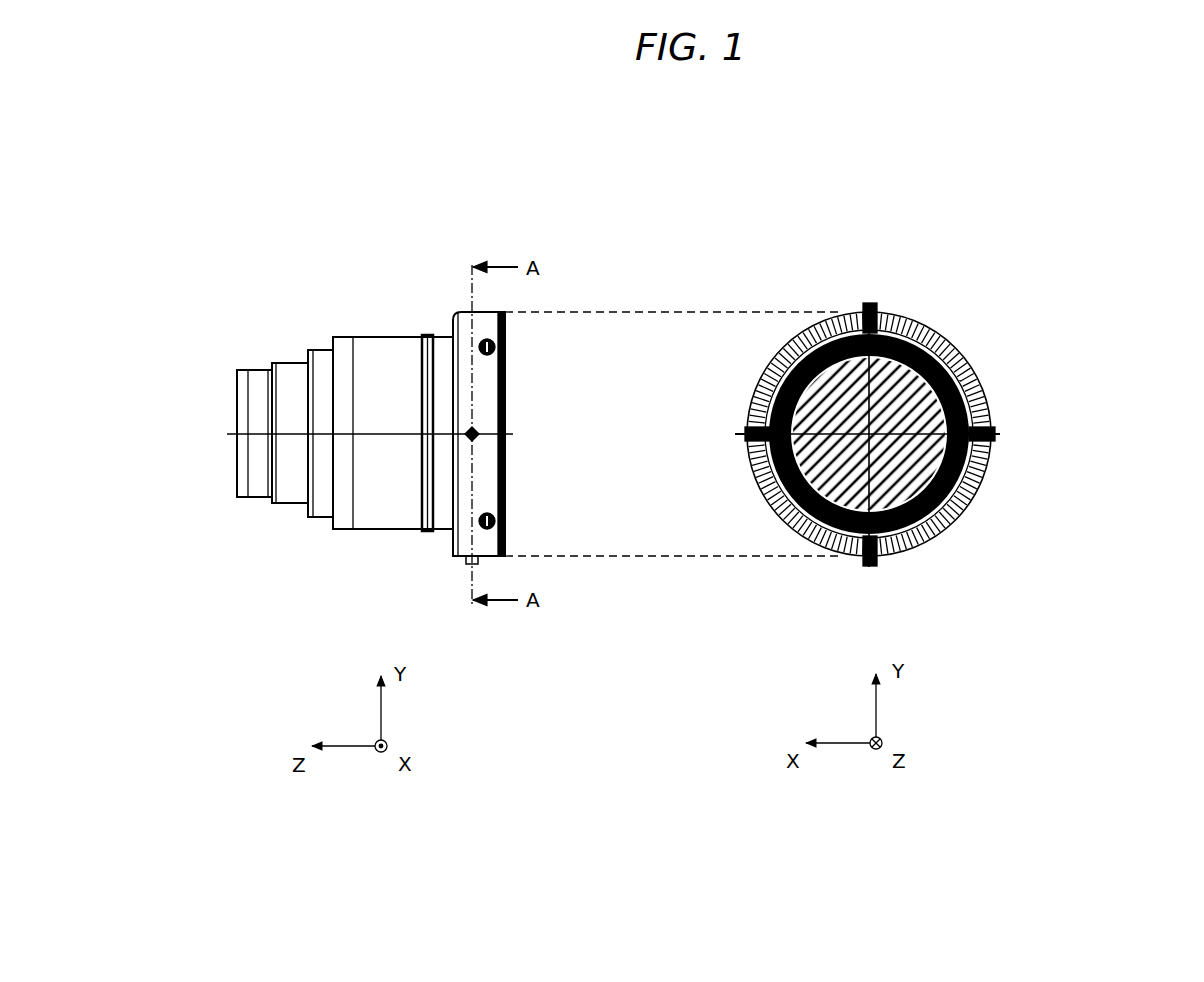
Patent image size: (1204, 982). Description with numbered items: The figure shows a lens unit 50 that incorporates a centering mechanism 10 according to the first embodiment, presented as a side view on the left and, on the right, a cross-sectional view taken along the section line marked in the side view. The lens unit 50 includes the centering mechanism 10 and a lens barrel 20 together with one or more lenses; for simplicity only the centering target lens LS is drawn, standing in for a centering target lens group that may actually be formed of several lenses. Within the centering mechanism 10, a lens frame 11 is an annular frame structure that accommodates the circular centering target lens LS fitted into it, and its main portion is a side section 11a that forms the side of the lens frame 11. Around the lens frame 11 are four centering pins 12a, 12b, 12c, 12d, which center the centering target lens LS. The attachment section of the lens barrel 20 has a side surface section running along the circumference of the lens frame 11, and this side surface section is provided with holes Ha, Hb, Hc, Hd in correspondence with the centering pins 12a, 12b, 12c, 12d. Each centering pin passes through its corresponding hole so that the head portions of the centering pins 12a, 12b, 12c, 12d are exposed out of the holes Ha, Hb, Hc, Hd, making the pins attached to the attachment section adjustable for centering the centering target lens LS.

The lens unit 50 is at (388, 284).
The lens barrel 20 is at (322, 365).
The centering mechanism 10 is at (458, 296).
The lens frame 11 is at (938, 318).
The side section 11a is at (1117, 452).
The centering pin 12a is at (872, 310).
The centering pin 12b is at (870, 565).
The centering pin 12c is at (745, 430).
The centering pin 12d is at (993, 428).
The hole Ha is at (861, 303).
The hole Hb is at (857, 571).
The hole Hc is at (736, 448).
The hole Hd is at (1008, 447).
The centering target lens LS is at (960, 517).